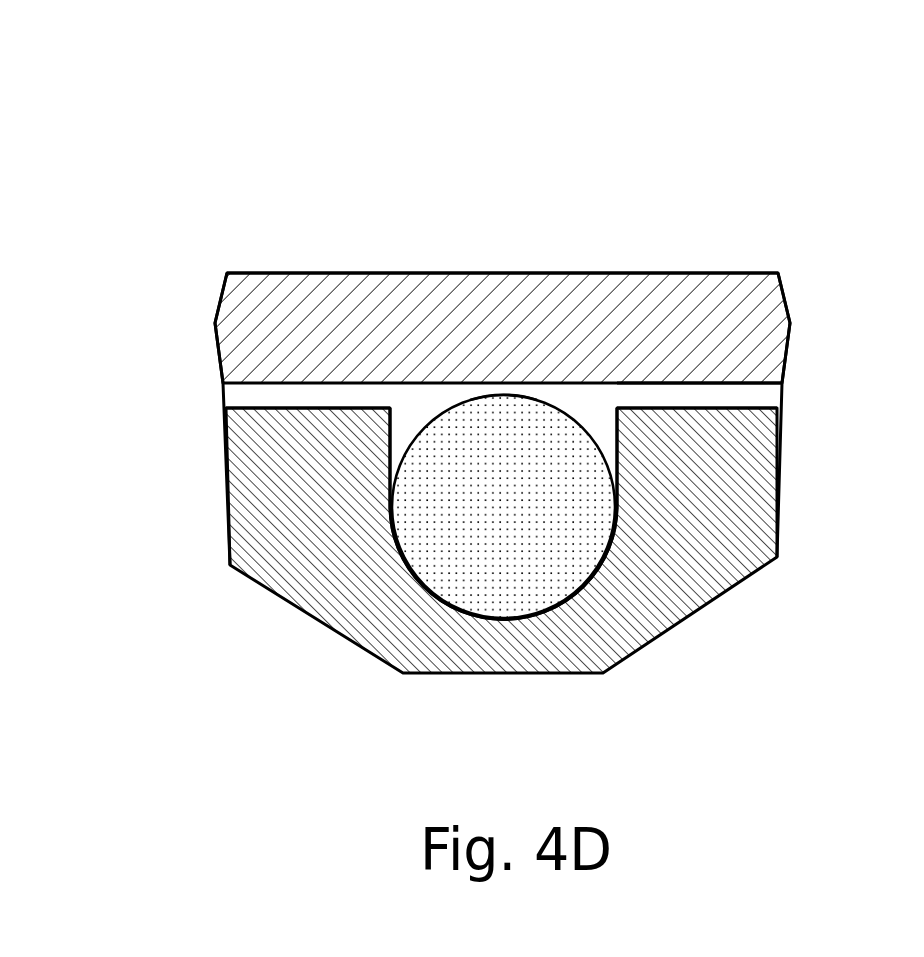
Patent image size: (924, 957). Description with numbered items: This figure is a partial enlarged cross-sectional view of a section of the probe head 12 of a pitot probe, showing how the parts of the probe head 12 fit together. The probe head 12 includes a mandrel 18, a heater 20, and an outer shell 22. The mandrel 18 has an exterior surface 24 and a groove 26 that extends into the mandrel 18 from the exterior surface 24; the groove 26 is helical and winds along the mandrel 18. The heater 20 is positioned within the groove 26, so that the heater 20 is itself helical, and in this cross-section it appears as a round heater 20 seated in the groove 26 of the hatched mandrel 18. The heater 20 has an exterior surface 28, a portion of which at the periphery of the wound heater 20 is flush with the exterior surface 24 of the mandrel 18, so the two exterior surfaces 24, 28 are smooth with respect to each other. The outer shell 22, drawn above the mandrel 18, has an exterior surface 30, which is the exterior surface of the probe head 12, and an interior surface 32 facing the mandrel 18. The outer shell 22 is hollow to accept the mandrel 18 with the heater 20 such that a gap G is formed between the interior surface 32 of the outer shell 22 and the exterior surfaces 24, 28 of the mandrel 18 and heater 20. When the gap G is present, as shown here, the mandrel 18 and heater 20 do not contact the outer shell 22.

The probe head 12 is at (168, 153).
The mandrel 18 is at (717, 503).
The heater 20 is at (523, 540).
The outer shell 22 is at (707, 310).
The exterior surface 24 is at (258, 407).
The groove 26 is at (418, 583).
The exterior surface 28 is at (497, 395).
The exterior surface 30 is at (625, 273).
The interior surface 32 is at (728, 383).
The gap G is at (765, 398).